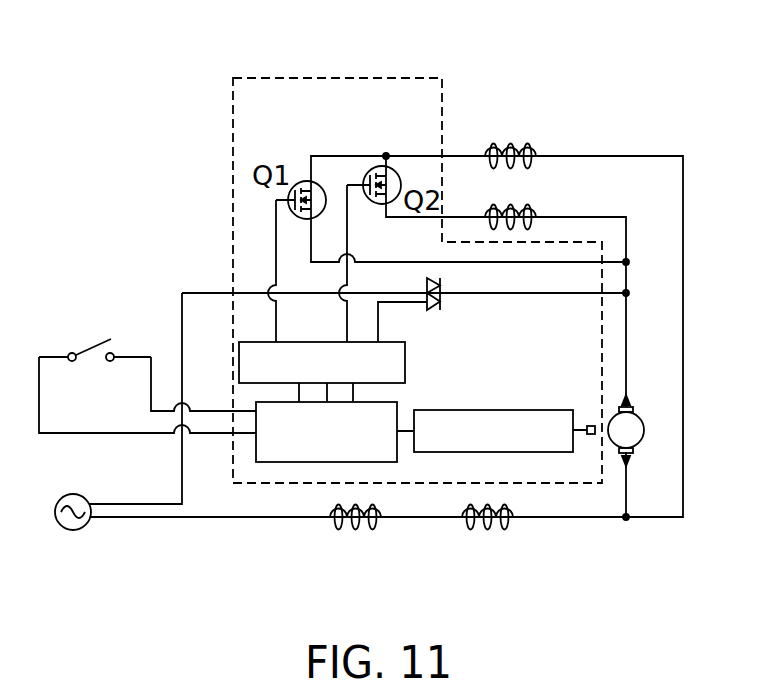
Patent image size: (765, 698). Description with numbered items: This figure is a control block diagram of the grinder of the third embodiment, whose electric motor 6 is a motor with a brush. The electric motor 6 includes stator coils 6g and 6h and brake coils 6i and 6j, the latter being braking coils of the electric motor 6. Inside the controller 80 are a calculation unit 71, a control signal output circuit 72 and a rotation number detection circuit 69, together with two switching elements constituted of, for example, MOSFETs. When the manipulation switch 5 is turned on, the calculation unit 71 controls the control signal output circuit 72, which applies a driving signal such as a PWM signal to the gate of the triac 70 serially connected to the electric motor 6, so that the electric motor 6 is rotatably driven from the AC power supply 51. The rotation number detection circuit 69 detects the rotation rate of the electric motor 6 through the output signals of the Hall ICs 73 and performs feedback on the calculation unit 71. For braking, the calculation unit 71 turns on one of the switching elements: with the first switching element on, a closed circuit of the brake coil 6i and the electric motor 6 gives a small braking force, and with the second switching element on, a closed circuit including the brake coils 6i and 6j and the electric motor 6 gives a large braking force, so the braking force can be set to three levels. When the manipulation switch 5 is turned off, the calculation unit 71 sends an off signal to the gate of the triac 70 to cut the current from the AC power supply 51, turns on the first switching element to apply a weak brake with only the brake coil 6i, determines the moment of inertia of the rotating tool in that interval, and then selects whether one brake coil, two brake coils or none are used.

The controller 80 is at (256, 78).
The brake coil 6i is at (510, 137).
The brake coil 6j is at (512, 198).
The stator coil 6g is at (352, 535).
The stator coil 6h is at (487, 535).
The manipulation switch 5 is at (91, 342).
The control signal output circuit 72 is at (405, 344).
The calculation unit 71 is at (400, 412).
The rotation number detection circuit 69 is at (522, 410).
The Hall IC 73 is at (592, 423).
The triac 70 is at (443, 303).
The electric motor 6 is at (640, 410).
The AC power supply 51 is at (70, 532).